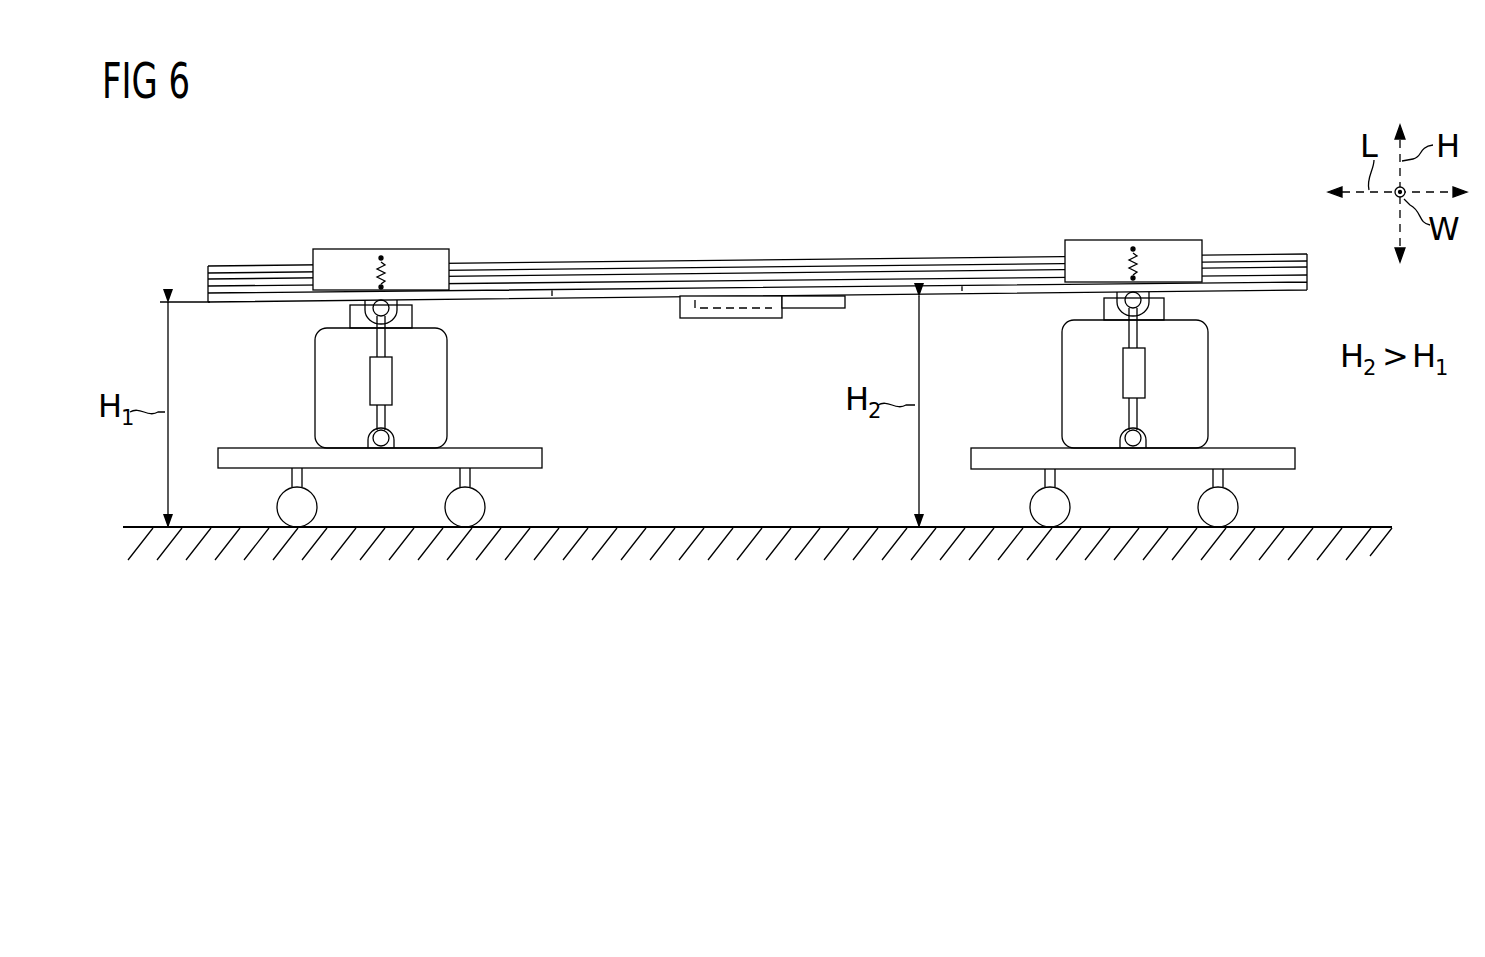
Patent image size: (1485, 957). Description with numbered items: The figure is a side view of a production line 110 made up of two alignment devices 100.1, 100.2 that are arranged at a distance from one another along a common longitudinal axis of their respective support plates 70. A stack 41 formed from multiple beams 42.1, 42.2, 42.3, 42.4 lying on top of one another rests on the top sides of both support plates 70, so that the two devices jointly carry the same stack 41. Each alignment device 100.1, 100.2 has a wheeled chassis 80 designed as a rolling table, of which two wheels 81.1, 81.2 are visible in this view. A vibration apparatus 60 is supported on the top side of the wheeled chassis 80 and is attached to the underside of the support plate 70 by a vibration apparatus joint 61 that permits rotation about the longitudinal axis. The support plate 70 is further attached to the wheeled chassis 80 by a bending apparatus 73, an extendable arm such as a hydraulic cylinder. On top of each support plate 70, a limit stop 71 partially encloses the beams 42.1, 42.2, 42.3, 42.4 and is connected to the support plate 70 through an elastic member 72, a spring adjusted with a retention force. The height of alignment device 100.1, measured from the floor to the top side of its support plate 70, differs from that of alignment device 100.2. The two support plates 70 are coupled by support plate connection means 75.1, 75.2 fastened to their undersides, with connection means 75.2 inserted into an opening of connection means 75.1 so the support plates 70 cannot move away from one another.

The production line 110 is at (676, 140).
The alignment device 100.1 is at (298, 225).
The alignment device 100.2 is at (1050, 215).
The stack 41 is at (757, 267).
The beam 42.1 is at (617, 264).
The beam 42.2 is at (683, 270).
The beam 42.3 is at (750, 276).
The beam 42.4 is at (818, 282).
The support plate 70 is at (260, 304).
The limit stop 71 is at (337, 260).
The elastic member 72 is at (386, 256).
The bending apparatus 73 is at (393, 380).
The vibration apparatus joint 61 is at (415, 318).
The vibration apparatus 60 is at (313, 397).
The support plate connection means 75.1 is at (700, 320).
The support plate connection means 75.2 is at (815, 310).
The wheeled chassis 80 is at (545, 458).
The wheel 81.1 is at (318, 507).
The wheel 81.2 is at (486, 507).